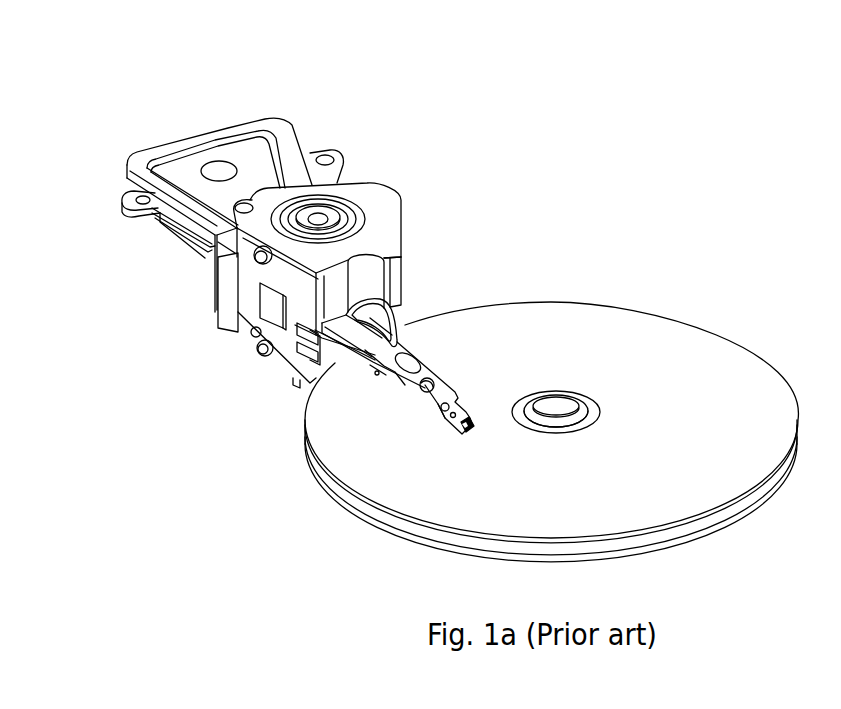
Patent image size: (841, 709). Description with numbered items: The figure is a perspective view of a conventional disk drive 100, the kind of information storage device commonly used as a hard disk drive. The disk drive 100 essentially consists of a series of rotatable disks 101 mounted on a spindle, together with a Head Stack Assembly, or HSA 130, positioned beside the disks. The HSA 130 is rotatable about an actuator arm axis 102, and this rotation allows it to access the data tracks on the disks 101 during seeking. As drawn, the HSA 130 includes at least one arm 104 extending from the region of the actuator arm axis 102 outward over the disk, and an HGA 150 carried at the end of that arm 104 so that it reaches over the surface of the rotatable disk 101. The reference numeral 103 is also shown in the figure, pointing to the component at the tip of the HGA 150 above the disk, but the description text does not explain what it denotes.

The disk drive 100 is at (72, 65).
The rotatable disks 101 is at (618, 357).
The actuator arm axis 102 is at (325, 220).
The slider 103 is at (468, 420).
The arm 104 is at (410, 346).
The Head Stack Assembly (HSA) 130 is at (387, 253).
The HGA 150 is at (440, 388).